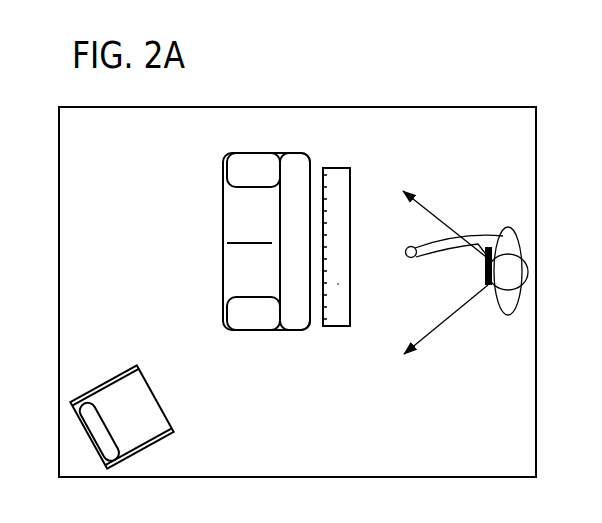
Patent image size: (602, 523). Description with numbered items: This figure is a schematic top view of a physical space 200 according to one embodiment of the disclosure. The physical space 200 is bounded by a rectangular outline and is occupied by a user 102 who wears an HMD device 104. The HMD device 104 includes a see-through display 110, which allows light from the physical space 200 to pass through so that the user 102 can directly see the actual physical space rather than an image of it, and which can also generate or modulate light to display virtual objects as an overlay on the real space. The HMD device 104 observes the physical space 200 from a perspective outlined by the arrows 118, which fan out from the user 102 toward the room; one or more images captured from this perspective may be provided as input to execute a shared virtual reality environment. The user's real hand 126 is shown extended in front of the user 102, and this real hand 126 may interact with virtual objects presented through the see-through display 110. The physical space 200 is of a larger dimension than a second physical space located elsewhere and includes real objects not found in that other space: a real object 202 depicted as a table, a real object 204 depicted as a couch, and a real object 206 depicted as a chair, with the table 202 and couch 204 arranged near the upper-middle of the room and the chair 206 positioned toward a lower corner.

The physical space 200 is at (117, 143).
The real object 204 is at (276, 152).
The real object 202 is at (337, 167).
The real object 206 is at (131, 366).
The user 102 is at (450, 276).
The HMD device 104 is at (487, 294).
The see-through display 110 is at (484, 266).
The arrows 118 is at (420, 206).
The real hand 126 is at (409, 257).